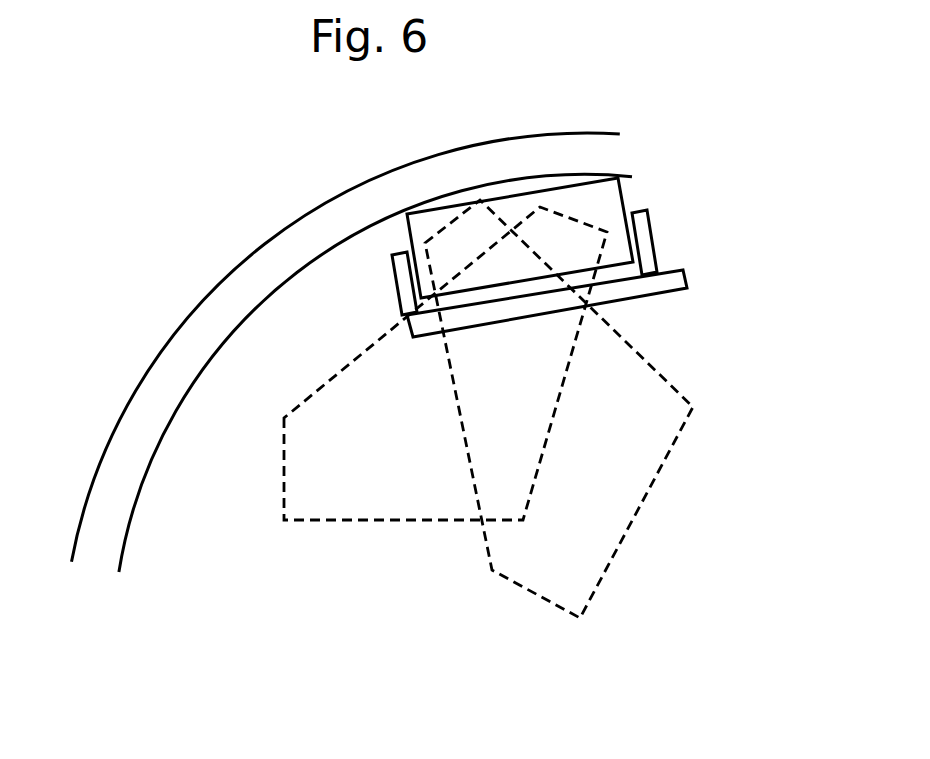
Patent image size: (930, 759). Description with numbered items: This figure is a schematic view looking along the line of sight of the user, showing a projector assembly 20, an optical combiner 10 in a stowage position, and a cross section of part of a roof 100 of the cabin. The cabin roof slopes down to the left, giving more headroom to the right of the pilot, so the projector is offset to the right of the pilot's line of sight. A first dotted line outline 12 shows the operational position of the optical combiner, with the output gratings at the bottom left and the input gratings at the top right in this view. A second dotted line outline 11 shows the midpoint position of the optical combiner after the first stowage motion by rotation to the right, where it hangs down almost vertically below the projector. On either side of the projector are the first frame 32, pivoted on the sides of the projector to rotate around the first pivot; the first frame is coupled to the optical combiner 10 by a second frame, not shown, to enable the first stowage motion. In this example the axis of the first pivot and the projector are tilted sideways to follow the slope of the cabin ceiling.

The roof 100 is at (208, 312).
The optical combiner 10 is at (678, 278).
The projector assembly 20 is at (593, 203).
The first frame 32 is at (400, 262).
The second dotted line outline 11 is at (635, 517).
The first dotted line outline 12 is at (405, 522).